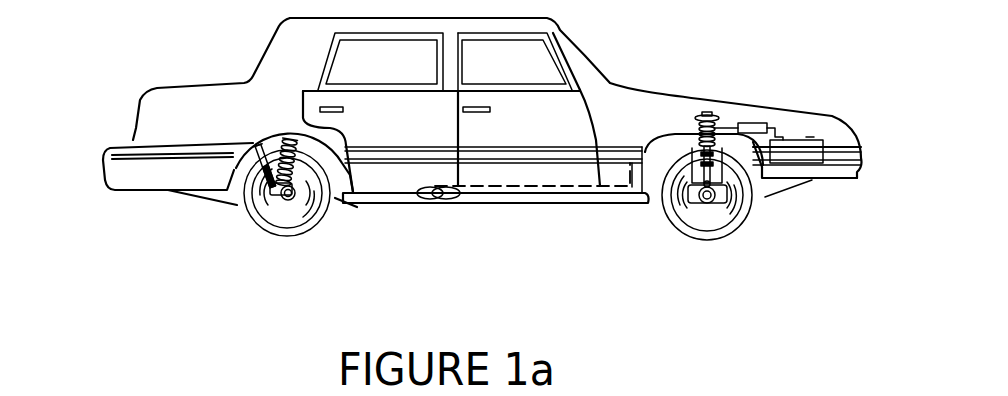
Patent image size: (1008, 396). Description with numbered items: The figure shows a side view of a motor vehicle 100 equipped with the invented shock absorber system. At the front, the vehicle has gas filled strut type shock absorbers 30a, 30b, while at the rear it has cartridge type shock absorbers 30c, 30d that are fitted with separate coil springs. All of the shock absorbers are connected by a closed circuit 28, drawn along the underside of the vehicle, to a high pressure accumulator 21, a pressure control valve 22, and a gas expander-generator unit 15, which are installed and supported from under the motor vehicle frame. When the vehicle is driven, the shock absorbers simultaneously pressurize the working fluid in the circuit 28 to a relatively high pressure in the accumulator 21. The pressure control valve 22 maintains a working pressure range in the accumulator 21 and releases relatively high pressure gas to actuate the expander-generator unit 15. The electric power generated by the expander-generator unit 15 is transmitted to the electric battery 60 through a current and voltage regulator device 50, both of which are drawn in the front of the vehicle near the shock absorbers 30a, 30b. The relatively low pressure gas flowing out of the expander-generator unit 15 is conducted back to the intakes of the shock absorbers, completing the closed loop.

The motor vehicle 100 is at (252, 288).
The gas expander-generator unit 15 is at (438, 192).
The high pressure accumulator 21 is at (427, 200).
The pressure control valve 22 is at (516, 235).
The closed circuit 28 is at (530, 195).
The front gas filled strut type shock absorber 30a is at (707, 117).
The front gas filled strut type shock absorber 30b is at (700, 128).
The rear cartridge type shock absorber 30c is at (240, 167).
The rear cartridge type shock absorber 30d is at (312, 137).
The current and voltage regulator device 50 is at (797, 140).
The electric battery 60 is at (753, 123).